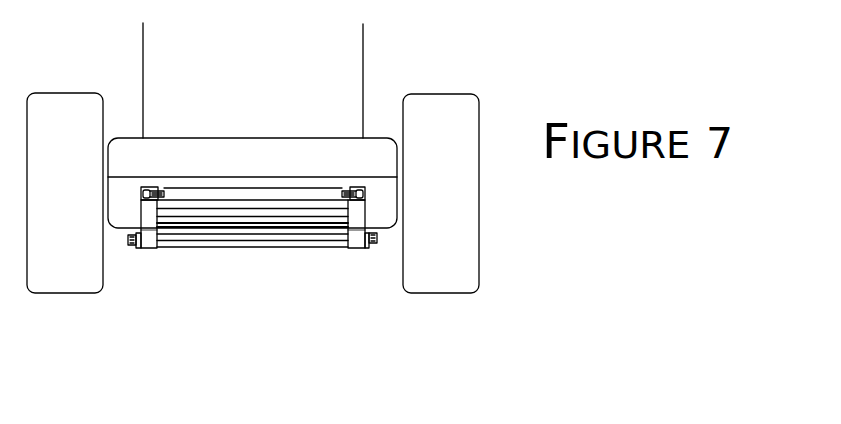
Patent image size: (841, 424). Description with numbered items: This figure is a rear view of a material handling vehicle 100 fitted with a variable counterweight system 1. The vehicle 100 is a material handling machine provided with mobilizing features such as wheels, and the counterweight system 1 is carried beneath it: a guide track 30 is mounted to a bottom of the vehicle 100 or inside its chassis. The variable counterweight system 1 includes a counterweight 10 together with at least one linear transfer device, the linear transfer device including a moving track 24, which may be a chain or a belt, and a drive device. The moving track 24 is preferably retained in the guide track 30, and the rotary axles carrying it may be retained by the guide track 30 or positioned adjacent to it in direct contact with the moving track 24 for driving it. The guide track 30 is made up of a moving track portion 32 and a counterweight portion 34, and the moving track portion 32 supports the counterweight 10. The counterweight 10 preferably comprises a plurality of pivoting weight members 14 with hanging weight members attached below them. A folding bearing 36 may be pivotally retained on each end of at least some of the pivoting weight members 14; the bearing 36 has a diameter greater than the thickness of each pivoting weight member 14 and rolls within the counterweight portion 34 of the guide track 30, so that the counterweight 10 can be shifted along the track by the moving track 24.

The variable counterweight system 1 is at (295, 295).
The material handling vehicle 100 is at (387, 78).
The counterweight 10 is at (233, 256).
The pivoting weight member 14 is at (232, 193).
The guide track 30 is at (143, 250).
The moving track portion 32 is at (135, 248).
The counterweight portion 34 is at (152, 237).
The folding bearing 36 is at (147, 188).
The moving track 24 is at (127, 238).